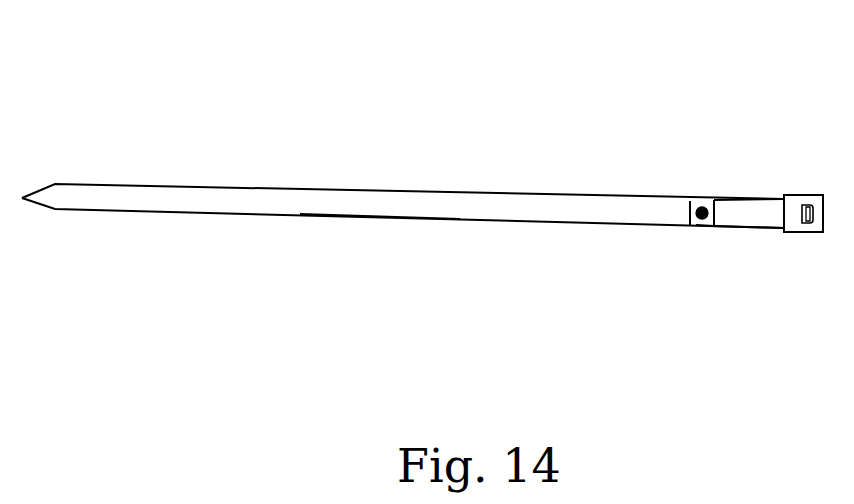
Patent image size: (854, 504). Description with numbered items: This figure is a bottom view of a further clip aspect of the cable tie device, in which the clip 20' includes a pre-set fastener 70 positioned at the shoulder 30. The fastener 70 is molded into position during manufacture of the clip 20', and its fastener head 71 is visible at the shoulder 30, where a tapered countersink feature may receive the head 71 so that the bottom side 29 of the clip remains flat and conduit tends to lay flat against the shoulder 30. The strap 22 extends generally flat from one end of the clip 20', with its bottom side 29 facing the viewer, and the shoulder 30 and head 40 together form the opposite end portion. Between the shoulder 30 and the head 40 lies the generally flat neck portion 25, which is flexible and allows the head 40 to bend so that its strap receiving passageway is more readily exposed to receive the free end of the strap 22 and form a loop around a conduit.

The clip 20' is at (434, 146).
The strap 22 is at (242, 198).
The bottom side 29 is at (388, 208).
The fastener 70 is at (682, 193).
The fastener head 71 is at (702, 203).
The shoulder 30 is at (707, 227).
The neck portion 25 is at (758, 217).
The head 40 is at (810, 193).